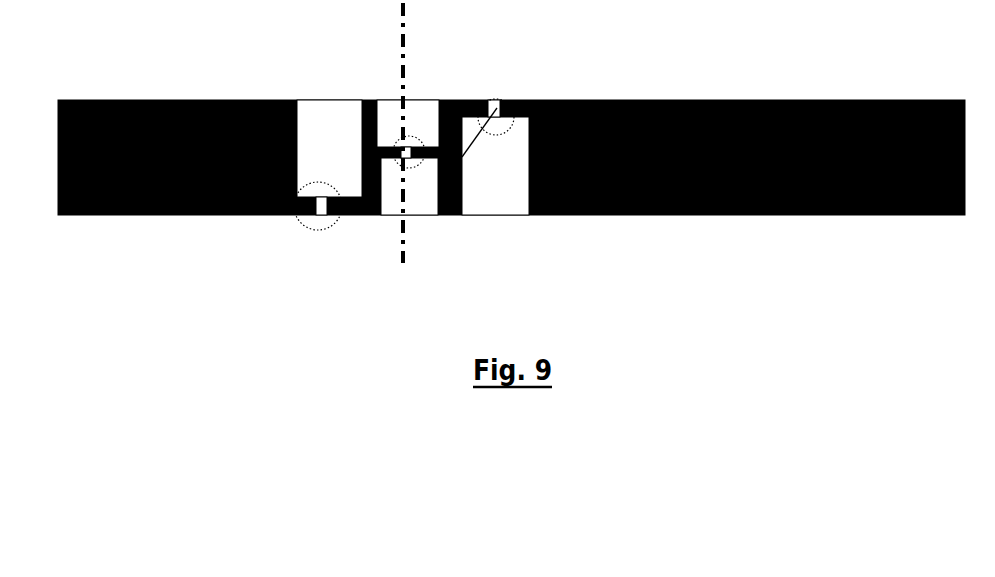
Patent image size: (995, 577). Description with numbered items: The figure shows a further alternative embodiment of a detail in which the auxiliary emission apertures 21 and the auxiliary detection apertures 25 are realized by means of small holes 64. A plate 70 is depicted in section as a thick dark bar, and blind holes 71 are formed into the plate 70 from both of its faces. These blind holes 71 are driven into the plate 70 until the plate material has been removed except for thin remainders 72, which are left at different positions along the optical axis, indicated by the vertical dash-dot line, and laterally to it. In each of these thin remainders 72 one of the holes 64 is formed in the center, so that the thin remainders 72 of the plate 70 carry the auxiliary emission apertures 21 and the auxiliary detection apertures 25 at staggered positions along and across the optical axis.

The plate 70 is at (780, 215).
The blind holes 71 is at (324, 117).
The thin remainders 72 is at (500, 104).
The auxiliary emission apertures 21 is at (403, 148).
The auxiliary detection apertures 25 is at (403, 148).
The holes 64 is at (405, 150).